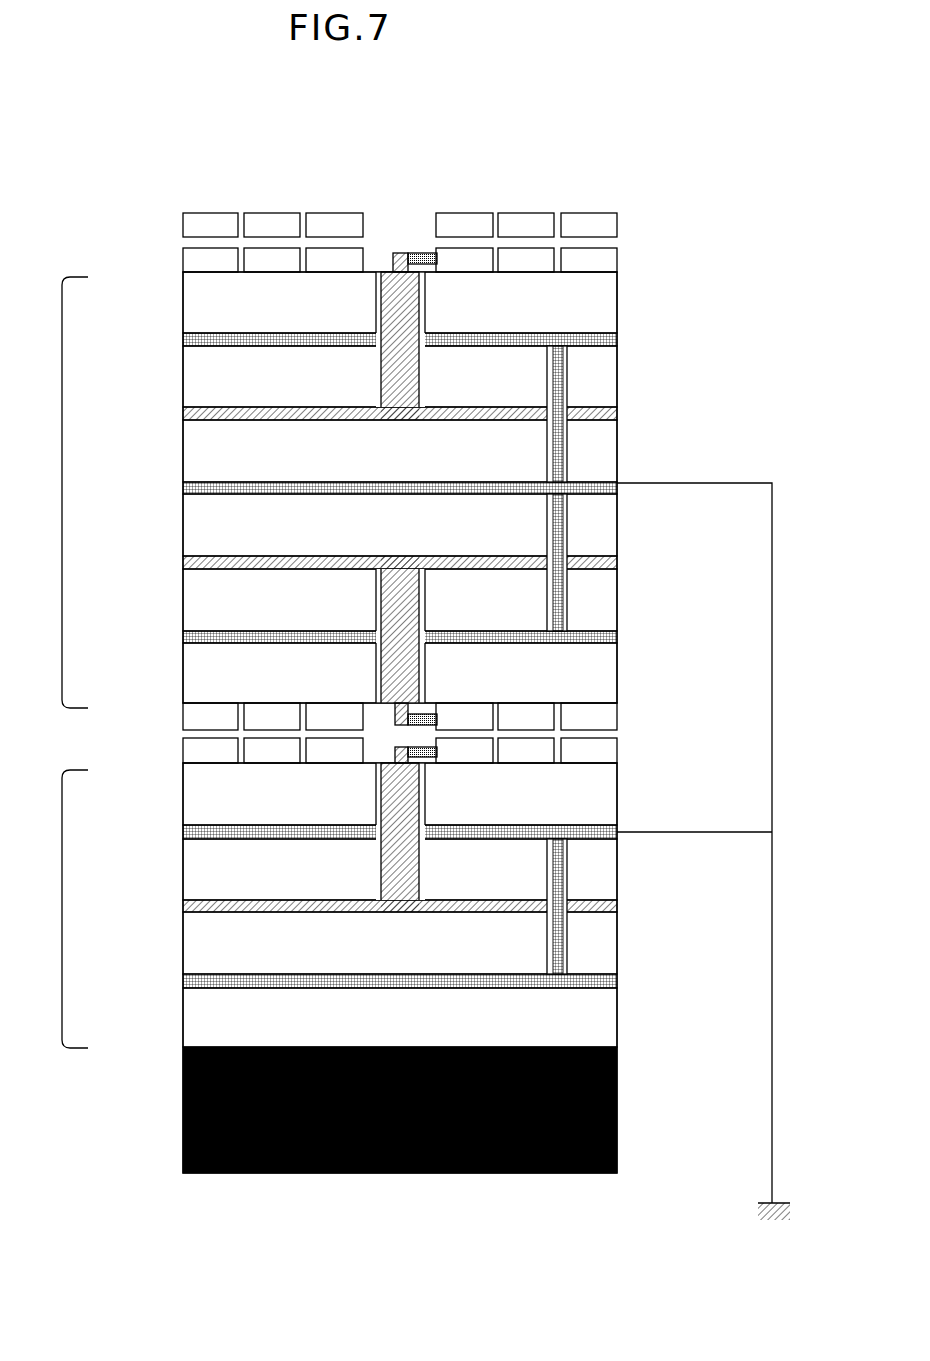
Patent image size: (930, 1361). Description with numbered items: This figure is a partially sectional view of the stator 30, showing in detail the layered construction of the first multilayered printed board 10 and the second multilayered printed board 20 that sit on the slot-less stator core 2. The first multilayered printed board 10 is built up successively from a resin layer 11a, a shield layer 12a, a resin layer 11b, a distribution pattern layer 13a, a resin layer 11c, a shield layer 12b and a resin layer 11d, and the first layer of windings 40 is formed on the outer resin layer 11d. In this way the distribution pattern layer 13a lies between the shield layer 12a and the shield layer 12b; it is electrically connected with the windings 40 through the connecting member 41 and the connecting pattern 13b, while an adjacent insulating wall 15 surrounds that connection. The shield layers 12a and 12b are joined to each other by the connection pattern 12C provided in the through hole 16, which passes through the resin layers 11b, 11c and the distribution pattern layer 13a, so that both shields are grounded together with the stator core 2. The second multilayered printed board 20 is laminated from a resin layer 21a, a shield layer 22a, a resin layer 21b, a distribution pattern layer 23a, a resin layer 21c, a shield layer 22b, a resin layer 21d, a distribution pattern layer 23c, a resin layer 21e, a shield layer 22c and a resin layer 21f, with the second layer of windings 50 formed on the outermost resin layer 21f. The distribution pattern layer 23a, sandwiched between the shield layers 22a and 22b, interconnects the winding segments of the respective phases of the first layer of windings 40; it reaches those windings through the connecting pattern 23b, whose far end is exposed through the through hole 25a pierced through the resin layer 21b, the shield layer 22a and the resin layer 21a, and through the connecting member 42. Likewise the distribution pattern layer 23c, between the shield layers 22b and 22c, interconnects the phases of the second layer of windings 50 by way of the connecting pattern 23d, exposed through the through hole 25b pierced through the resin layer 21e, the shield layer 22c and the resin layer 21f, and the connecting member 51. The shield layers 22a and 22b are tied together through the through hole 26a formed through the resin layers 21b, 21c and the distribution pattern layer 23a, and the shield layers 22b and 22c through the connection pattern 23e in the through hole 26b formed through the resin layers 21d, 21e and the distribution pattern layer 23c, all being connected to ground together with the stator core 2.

The slot-less stator core 2 is at (192, 1078).
The first multilayered printed board 10 is at (34, 951).
The resin layer 11a is at (192, 1009).
The resin layer 11b is at (192, 941).
The resin layer 11c is at (192, 879).
The resin layer 11d is at (192, 799).
The shield layer 12a is at (192, 980).
The shield layer 12b is at (192, 832).
The connection pattern 12C is at (573, 858).
The distribution pattern layer 13a is at (192, 909).
The connecting pattern 13b is at (547, 837).
The via insulating wall 15 is at (423, 802).
The through hole 16 is at (629, 906).
The second multilayered printed board 20 is at (34, 548).
The resin layer 21a is at (192, 667).
The resin layer 21b is at (192, 591).
The resin layer 21c is at (192, 514).
The resin layer 21d is at (192, 448).
The resin layer 21e is at (192, 387).
The resin layer 21f is at (192, 307).
The shield layer 22a is at (192, 637).
The shield layer 22b is at (192, 487).
The shield layer 22c is at (192, 339).
The distribution pattern layer 23a is at (192, 562).
The connecting pattern 23b is at (552, 629).
The distribution pattern layer 23c is at (192, 413).
The connecting pattern 23d is at (552, 402).
The connection pattern 23e is at (560, 399).
The through hole 25a is at (424, 693).
The through hole 25b is at (424, 322).
The through hole 26a is at (565, 537).
The through hole 26b is at (635, 410).
The stator 30 is at (406, 1226).
The first layer of windings 40 is at (602, 717).
The connecting member 41 is at (395, 756).
The connecting member 42 is at (395, 717).
The second layer of windings 50 is at (337, 230).
The connecting member 51 is at (405, 258).